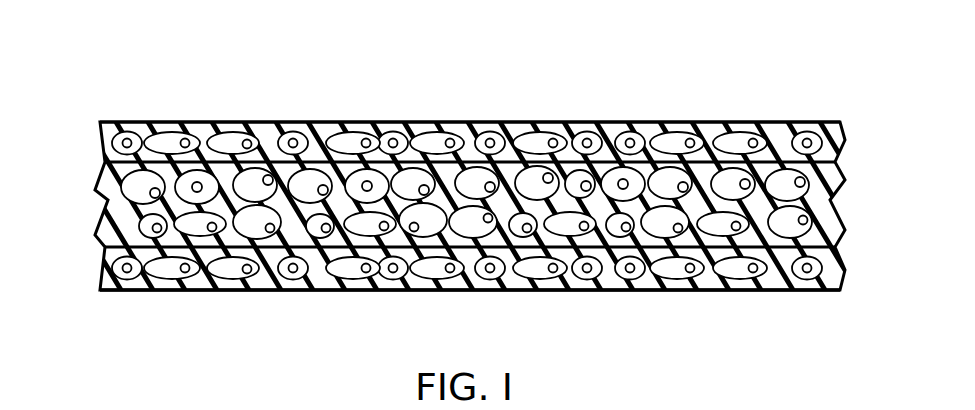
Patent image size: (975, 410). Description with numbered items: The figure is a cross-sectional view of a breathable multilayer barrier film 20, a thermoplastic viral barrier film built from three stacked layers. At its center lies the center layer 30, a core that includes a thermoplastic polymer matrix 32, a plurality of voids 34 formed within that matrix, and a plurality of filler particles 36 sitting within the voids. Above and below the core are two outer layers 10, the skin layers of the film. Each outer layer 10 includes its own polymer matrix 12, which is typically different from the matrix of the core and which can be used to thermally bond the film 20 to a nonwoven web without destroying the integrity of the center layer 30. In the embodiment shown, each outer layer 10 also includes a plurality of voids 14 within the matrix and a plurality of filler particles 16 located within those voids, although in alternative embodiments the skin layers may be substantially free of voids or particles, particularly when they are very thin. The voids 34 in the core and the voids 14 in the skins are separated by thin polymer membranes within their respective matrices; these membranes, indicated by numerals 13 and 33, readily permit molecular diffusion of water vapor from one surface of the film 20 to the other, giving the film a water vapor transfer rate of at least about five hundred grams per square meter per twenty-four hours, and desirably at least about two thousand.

The outer layer 10 is at (797, 121).
The polymer matrix 12 is at (838, 143).
The membrane 13 is at (470, 160).
The voids 14 is at (100, 152).
The filler particles 16 is at (112, 140).
The breathable multilayer barrier film 20 is at (278, 292).
The center layer 30 is at (838, 216).
The thermoplastic polymer matrix 32 is at (843, 171).
The membrane 33 is at (673, 185).
The voids 34 is at (137, 187).
The filler particles 36 is at (120, 237).